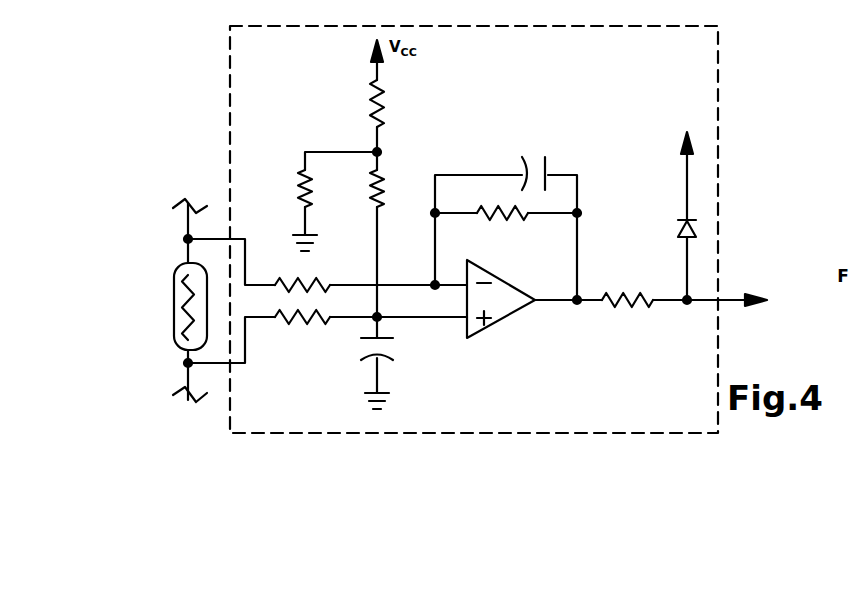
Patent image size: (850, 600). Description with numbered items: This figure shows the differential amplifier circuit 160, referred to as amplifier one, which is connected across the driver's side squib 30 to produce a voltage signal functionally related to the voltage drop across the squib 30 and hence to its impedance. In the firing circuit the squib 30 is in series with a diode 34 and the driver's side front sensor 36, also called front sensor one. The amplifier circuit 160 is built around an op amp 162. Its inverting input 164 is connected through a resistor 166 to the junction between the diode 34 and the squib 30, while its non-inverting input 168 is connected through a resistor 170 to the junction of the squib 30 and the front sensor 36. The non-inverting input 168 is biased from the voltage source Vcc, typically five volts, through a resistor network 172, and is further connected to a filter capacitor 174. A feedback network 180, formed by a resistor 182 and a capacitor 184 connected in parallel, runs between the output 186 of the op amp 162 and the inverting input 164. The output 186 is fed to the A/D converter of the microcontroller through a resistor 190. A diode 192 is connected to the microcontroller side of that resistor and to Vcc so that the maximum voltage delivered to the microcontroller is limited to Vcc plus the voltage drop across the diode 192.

The driver's side squib 30 is at (175, 273).
The diode 34 is at (188, 184).
The driver's side front sensor 36 is at (154, 431).
The differential amplifier circuit 160 is at (543, 25).
The op amp 162 is at (501, 302).
The inverting input 164 is at (465, 287).
The resistor 166 is at (312, 281).
The non-inverting input 168 is at (460, 318).
The resistor 170 is at (297, 323).
The resistor network 172 is at (418, 97).
The filter capacitor 174 is at (396, 352).
The feedback network 180 is at (508, 166).
The resistor 182 is at (499, 224).
The capacitor 184 is at (538, 160).
The output 186 is at (580, 305).
The resistor 190 is at (636, 290).
The diode 192 is at (690, 233).